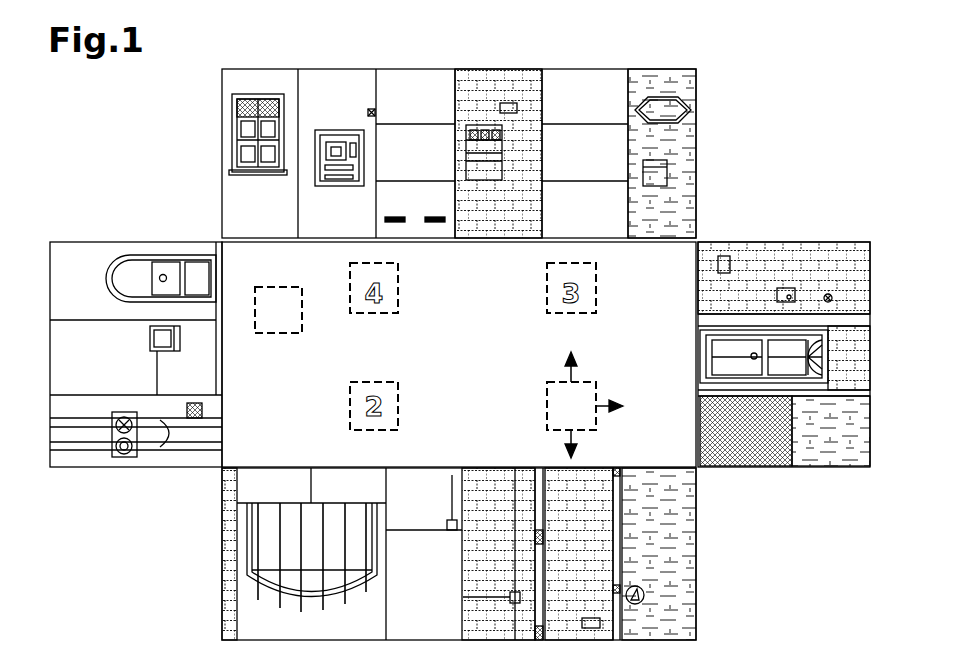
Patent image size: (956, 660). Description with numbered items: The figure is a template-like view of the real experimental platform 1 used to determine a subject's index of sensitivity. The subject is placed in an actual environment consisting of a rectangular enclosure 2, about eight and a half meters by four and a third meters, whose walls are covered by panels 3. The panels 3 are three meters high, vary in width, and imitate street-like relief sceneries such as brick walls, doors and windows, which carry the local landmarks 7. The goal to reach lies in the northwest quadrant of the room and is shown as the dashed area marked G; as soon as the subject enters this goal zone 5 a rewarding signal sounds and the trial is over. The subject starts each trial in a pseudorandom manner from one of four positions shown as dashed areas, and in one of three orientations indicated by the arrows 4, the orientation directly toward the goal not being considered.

The platform 1 is at (780, 114).
The rectangular enclosure 2 is at (660, 262).
The panels 3 is at (70, 330).
The arrows 4 is at (608, 404).
The goal zone 5 is at (268, 334).
The landmarks 7 is at (349, 130).